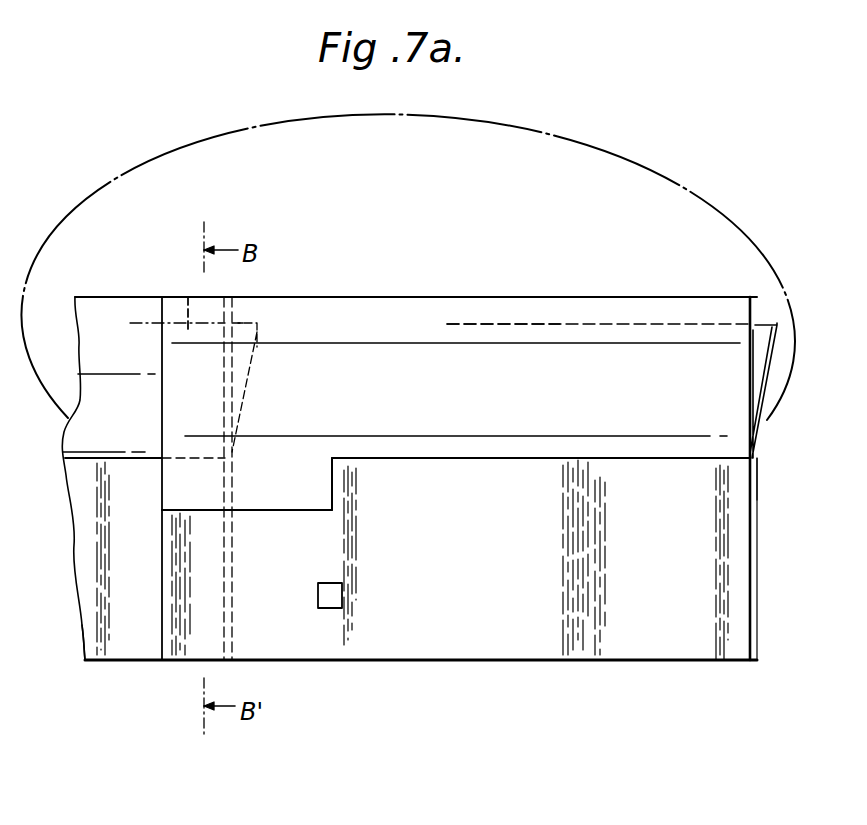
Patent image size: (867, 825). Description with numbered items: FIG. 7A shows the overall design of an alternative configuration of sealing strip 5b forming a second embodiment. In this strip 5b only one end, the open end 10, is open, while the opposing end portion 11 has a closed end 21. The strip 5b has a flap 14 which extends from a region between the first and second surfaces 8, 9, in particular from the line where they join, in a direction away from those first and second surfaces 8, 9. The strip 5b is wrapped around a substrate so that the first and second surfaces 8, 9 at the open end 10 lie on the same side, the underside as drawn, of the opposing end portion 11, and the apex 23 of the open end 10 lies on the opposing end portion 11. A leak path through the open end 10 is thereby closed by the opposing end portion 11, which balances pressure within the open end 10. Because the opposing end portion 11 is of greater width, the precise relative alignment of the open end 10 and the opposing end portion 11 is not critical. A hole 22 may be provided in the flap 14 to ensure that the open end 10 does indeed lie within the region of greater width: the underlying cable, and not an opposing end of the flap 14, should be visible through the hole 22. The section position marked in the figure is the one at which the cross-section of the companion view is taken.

The sealing strip 5b is at (510, 281).
The first surface 8 is at (757, 298).
The second surface 9 is at (763, 352).
The open end 10 is at (708, 362).
The opposing end portion 11 is at (200, 497).
The flap 14 is at (470, 635).
The closed end 21 is at (160, 605).
The hole 22 is at (318, 593).
The apex 23 is at (750, 460).